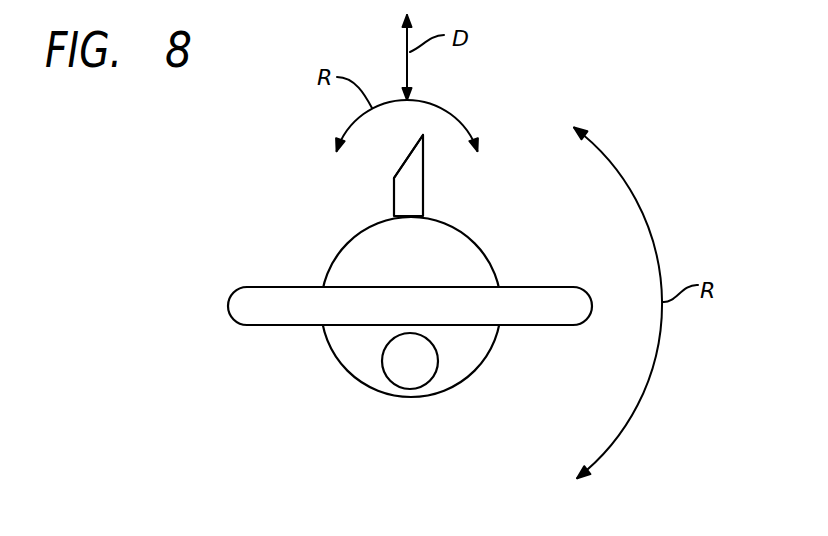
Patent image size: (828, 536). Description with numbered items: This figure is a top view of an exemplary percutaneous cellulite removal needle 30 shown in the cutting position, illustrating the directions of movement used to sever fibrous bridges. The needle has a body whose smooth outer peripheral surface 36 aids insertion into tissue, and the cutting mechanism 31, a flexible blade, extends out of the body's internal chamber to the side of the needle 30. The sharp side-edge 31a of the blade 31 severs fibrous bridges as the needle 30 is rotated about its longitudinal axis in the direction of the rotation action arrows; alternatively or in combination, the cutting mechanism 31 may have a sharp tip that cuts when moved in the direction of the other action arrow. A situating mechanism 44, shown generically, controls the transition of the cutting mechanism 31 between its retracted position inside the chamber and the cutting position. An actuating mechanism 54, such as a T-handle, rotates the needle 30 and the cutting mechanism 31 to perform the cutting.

The percutaneous cellulite removal needle 30 is at (281, 371).
The cutting mechanism 31 is at (407, 201).
The sharp side-edge 31a is at (393, 195).
The outer peripheral surface 36 is at (357, 235).
The situating mechanism 44 is at (382, 361).
The actuating mechanism 54 is at (266, 287).